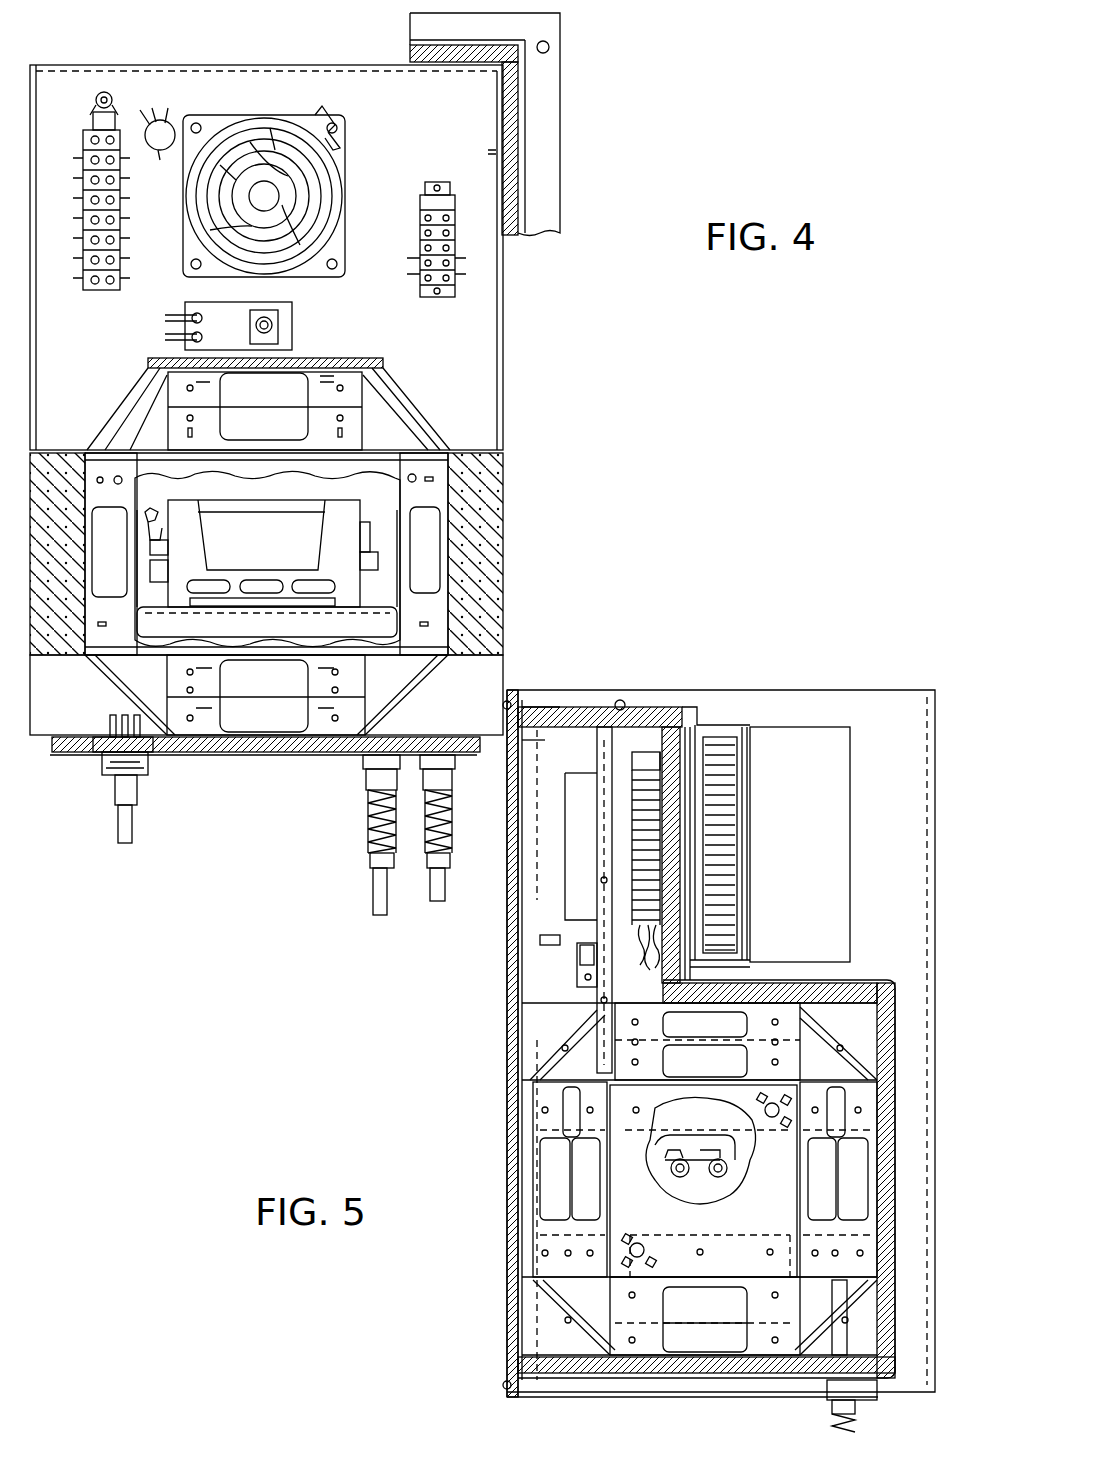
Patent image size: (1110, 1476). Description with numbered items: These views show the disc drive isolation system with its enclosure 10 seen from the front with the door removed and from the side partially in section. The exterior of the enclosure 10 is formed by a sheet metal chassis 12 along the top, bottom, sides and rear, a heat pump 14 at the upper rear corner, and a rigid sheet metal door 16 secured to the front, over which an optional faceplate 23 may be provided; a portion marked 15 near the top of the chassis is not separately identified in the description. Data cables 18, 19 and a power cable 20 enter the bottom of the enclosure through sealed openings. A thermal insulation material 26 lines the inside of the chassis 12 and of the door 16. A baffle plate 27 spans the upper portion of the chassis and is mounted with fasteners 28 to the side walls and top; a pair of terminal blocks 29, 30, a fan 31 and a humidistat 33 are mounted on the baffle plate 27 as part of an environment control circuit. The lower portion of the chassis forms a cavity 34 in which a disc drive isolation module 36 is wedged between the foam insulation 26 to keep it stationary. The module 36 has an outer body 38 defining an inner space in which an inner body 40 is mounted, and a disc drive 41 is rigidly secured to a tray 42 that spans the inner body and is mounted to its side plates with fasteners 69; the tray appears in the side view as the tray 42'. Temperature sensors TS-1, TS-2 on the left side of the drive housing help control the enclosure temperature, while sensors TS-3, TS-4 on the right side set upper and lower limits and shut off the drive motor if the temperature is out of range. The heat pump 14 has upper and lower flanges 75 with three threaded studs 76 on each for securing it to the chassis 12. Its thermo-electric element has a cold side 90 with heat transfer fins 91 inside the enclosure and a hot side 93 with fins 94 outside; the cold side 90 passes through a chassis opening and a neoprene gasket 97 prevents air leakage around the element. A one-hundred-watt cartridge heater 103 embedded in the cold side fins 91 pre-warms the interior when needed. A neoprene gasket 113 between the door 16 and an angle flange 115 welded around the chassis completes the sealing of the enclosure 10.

In FIG. 4, the enclosure 10 is at (567, 110).
In FIG. 5, the enclosure 10 is at (830, 690).
In FIG. 4, the sheet metal chassis 12 is at (410, 18).
In FIG. 5, the sheet metal chassis 12 is at (672, 710).
In FIG. 5, the heat pump 14 is at (850, 775).
In FIG. 4, the top wall 15 is at (420, 42).
In FIG. 5, the door 16 is at (520, 1080).
In FIG. 4, the data cable 18 is at (373, 885).
In FIG. 5, the data cable 18 is at (852, 1406).
In FIG. 4, the data cable 19 is at (432, 885).
In FIG. 4, the power cable 20 is at (132, 830).
In FIG. 5, the faceplate 23 is at (507, 990).
In FIG. 4, the thermal insulation material 26 is at (418, 62).
In FIG. 5, the thermal insulation material 26 is at (648, 707).
In FIG. 4, the baffle plate 27 is at (503, 333).
In FIG. 5, the baffle plate 27 is at (597, 750).
In FIG. 5, the fasteners 28 is at (622, 700).
In FIG. 4, the terminal block 29 is at (100, 292).
In FIG. 4, the terminal block 30 is at (437, 182).
In FIG. 4, the fan 31 is at (345, 195).
In FIG. 5, the fan 31 is at (585, 920).
In FIG. 4, the humidistat 33 is at (293, 322).
In FIG. 5, the humidistat 33 is at (577, 968).
In FIG. 4, the cavity 34 is at (480, 675).
In FIG. 5, the cavity 34 is at (840, 1010).
In FIG. 4, the disc drive isolation module 36 is at (135, 388).
In FIG. 5, the disc drive isolation module 36 is at (558, 1045).
In FIG. 4, the outer body 38 is at (385, 390).
In FIG. 5, the outer body 38 is at (712, 1015).
In FIG. 4, the inner body 40 is at (275, 398).
In FIG. 5, the inner body 40 is at (728, 1052).
In FIG. 4, the disc drive 41 is at (275, 505).
In FIG. 5, the disc drive 41 is at (700, 1098).
In FIG. 4, the tray 42 is at (288, 600).
In FIG. 5, the tray 42' is at (705, 1316).
In FIG. 4, the fasteners 69 is at (118, 545).
In FIG. 5, the flange 75 is at (697, 695).
In FIG. 5, the threaded studs 76 is at (700, 712).
In FIG. 5, the cold side 90 is at (635, 770).
In FIG. 5, the heat transfer fins 91 is at (632, 836).
In FIG. 5, the hot side 93 is at (720, 785).
In FIG. 5, the heat transfer fins 94 is at (730, 812).
In FIG. 5, the neoprene gasket 97 is at (735, 895).
In FIG. 5, the cartridge heater 103 is at (640, 930).
In FIG. 5, the neoprene gasket 113 is at (549, 742).
In FIG. 5, the angle flange 115 is at (535, 705).
In FIG. 4, the temperature sensor TS-1 is at (150, 570).
In FIG. 4, the temperature sensor TS-2 is at (155, 512).
In FIG. 5, the temperature sensor TS-3 is at (718, 1184).
In FIG. 4, the temperature sensor TS-4 is at (378, 548).
In FIG. 5, the temperature sensor TS-4 is at (680, 1178).